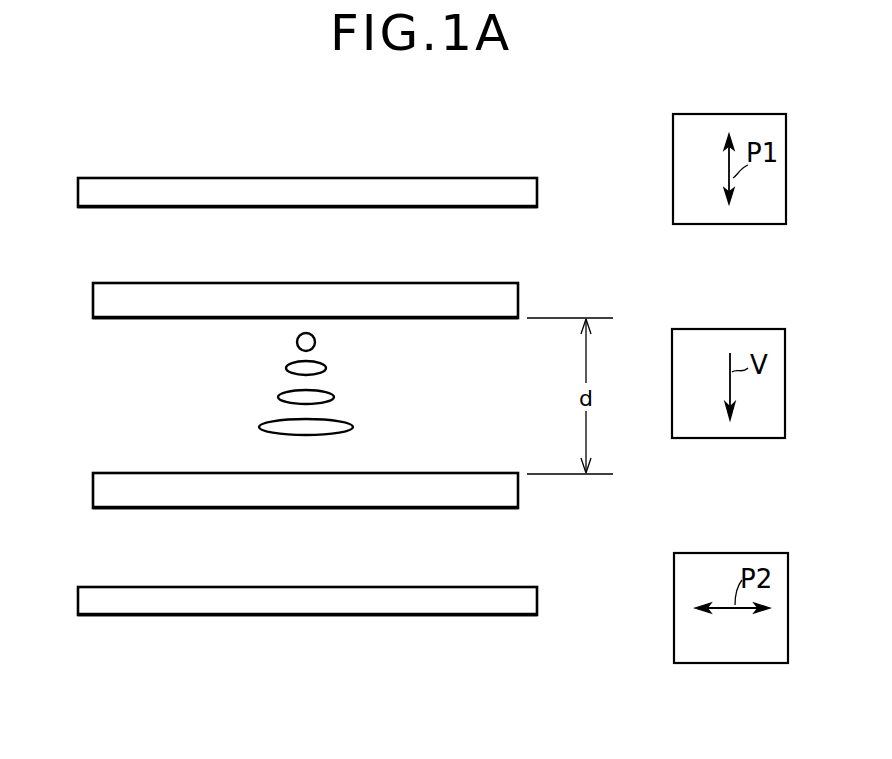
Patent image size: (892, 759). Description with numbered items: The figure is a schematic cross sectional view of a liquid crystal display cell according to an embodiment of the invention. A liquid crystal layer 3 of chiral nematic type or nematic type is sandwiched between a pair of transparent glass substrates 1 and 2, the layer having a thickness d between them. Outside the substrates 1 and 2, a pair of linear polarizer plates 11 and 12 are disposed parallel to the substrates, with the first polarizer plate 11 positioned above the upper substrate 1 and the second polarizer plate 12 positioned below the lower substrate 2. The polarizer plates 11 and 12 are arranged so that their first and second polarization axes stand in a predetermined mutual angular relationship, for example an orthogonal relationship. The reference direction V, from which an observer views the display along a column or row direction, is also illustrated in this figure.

The transparent glass substrate 1 is at (118, 292).
The transparent glass substrate 2 is at (118, 482).
The liquid crystal layer 3 is at (248, 337).
The linear polarizer plate 11 is at (523, 198).
The linear polarizer plate 12 is at (514, 605).